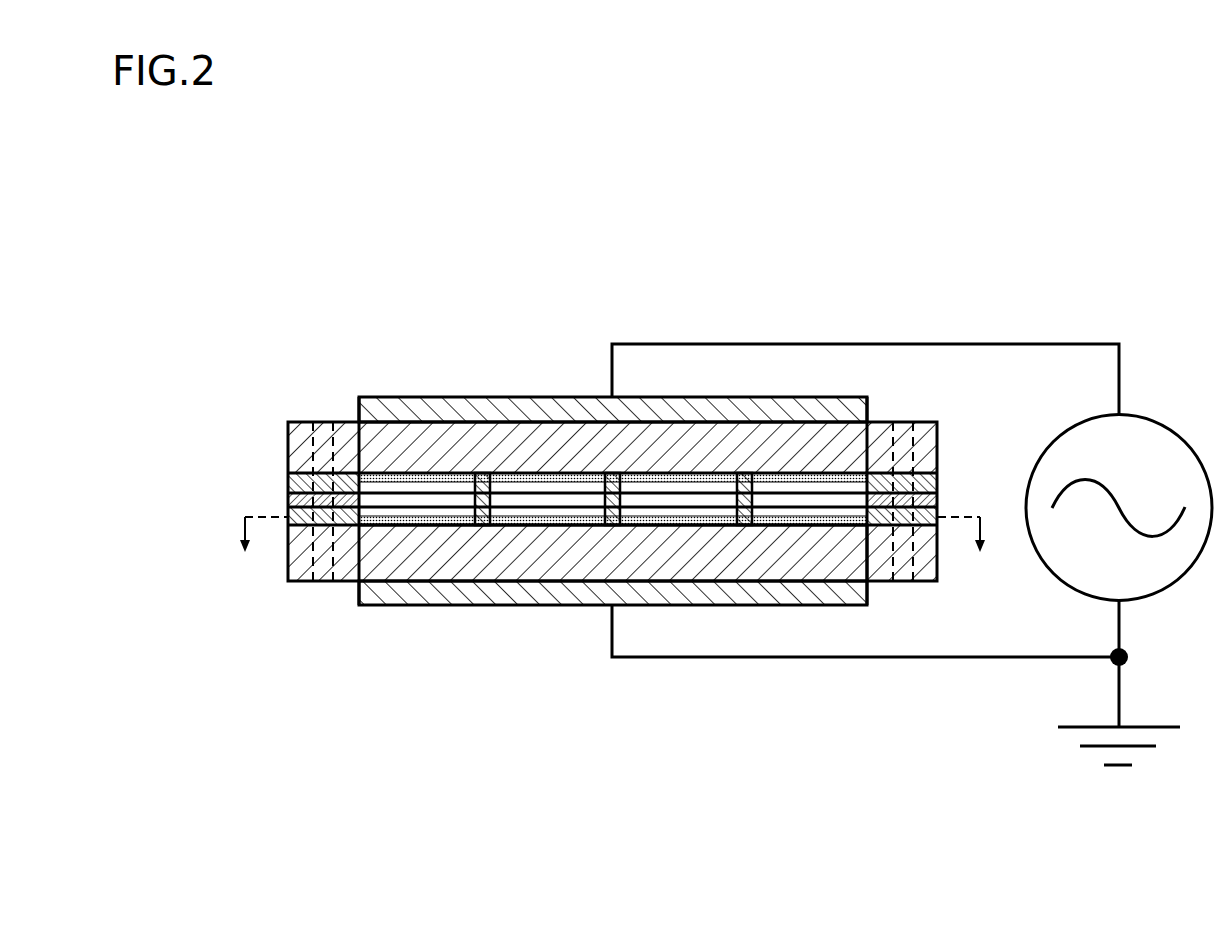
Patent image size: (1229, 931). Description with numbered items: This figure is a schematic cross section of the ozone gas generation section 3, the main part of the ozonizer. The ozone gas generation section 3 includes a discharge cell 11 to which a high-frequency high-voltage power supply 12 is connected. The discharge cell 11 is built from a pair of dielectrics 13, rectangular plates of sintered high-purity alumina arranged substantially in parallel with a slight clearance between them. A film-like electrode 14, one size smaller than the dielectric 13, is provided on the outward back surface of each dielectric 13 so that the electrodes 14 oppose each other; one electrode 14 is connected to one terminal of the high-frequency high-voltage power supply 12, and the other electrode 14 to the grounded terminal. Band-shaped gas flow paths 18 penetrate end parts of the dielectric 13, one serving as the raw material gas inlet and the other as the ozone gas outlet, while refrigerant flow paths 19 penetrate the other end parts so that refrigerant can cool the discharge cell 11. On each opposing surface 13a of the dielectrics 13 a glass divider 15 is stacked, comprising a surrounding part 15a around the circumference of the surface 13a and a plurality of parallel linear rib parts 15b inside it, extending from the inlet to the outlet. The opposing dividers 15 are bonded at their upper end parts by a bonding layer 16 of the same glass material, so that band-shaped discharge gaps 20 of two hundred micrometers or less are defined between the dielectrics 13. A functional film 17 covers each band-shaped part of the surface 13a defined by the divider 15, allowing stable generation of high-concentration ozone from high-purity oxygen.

The ozone gas generation section 3 is at (783, 172).
The discharge cell 11 is at (522, 362).
The high-frequency high-voltage power supply 12 is at (1173, 428).
The dielectric 13 is at (289, 440).
The opposing surface of the dielectric 13a is at (425, 480).
The electrode 14 is at (358, 408).
The divider 15 is at (598, 578).
The surrounding part 15a is at (288, 512).
The rib part 15b is at (478, 505).
The bonding layer 16 is at (742, 497).
The functional film 17 is at (675, 528).
The gas flow path 18 is at (858, 553).
The refrigerant flow path 19 is at (904, 440).
The discharge gap 20 is at (548, 510).